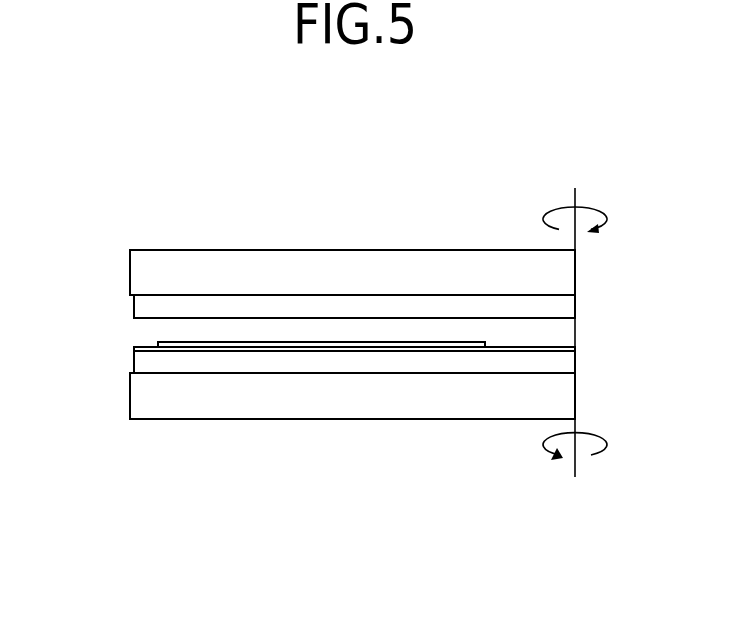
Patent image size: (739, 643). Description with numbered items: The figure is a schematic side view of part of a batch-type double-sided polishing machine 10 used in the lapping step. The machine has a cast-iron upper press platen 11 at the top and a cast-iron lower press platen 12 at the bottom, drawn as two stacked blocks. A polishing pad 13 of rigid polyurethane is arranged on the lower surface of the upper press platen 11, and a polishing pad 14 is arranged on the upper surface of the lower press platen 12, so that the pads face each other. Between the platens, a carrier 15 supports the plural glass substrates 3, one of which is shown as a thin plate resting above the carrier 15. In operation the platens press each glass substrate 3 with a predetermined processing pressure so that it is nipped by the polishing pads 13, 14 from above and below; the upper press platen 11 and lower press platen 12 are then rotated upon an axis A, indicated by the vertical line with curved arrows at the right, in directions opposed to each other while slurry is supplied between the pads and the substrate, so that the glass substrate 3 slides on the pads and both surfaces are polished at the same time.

The double-sided polishing machine 10 is at (367, 168).
The upper press platen 11 is at (155, 273).
The lower press platen 12 is at (155, 397).
The polishing pad 13 is at (155, 308).
The polishing pad 14 is at (155, 362).
The carrier 15 is at (134, 348).
The glass substrate 3 is at (190, 343).
The axis A is at (577, 193).